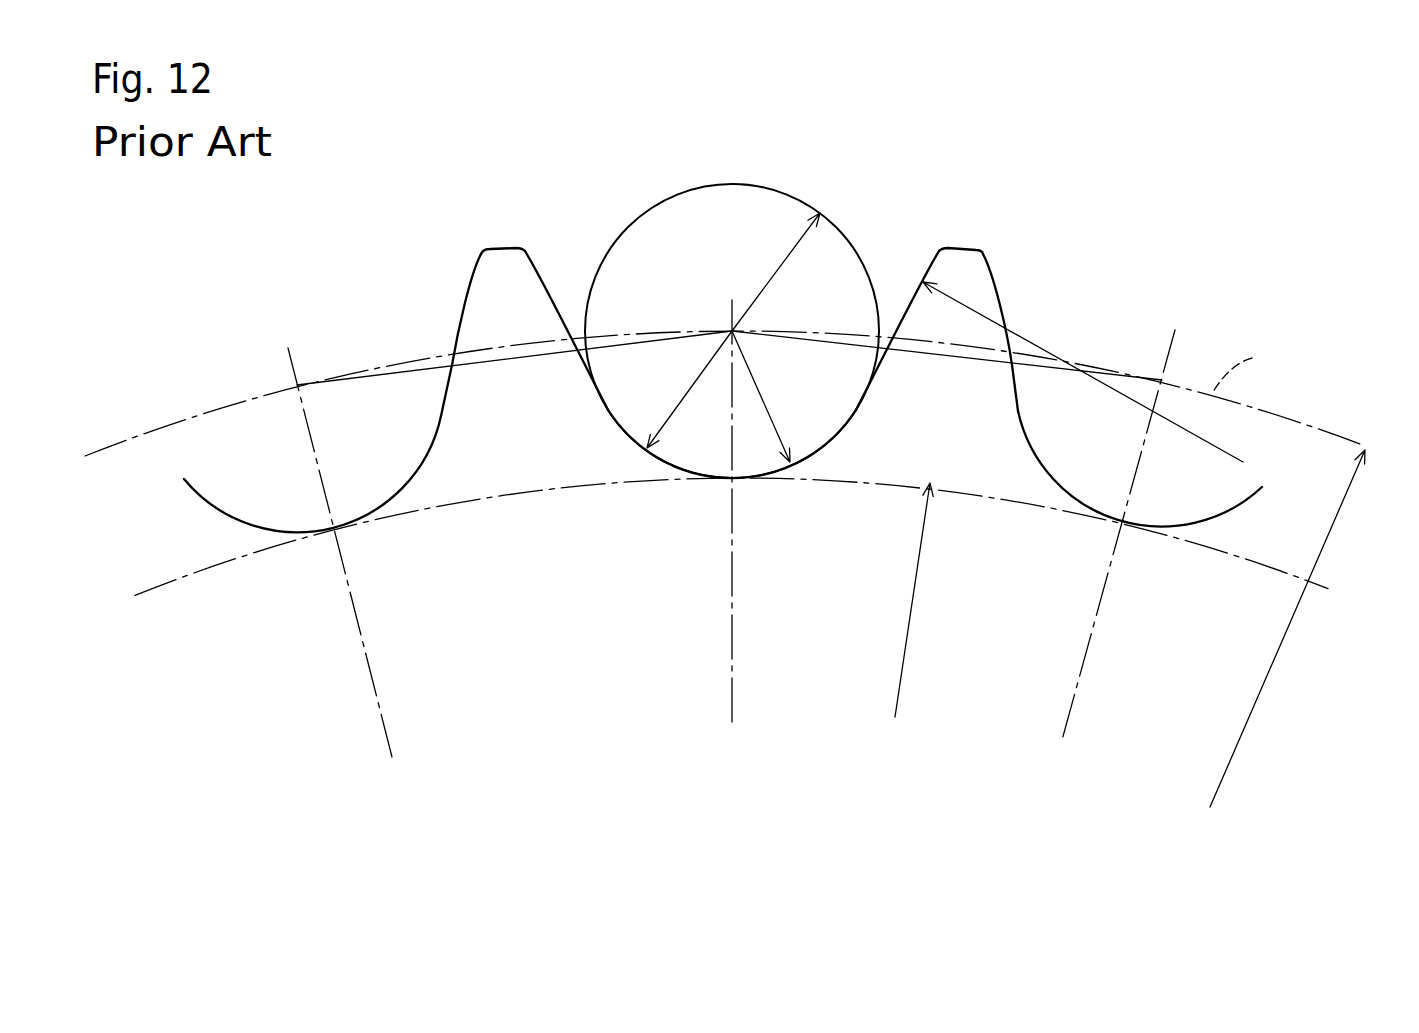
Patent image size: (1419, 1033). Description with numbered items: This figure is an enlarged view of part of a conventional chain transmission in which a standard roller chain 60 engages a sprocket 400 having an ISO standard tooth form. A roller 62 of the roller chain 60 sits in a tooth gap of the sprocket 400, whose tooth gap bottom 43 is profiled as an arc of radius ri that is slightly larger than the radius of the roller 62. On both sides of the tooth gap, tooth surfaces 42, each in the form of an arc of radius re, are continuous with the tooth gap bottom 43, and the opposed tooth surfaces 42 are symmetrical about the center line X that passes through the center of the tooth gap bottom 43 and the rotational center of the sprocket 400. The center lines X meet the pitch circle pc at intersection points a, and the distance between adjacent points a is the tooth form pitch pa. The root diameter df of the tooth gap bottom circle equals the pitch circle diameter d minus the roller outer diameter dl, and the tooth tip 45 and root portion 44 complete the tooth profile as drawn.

The roller chain 60 is at (769, 279).
The roller 62 is at (690, 187).
The sprocket 400 is at (725, 503).
The tooth surface 42 is at (468, 285).
The tooth tip 45 is at (503, 247).
The tooth gap bottom 43 is at (277, 526).
The root portion 44 is at (363, 480).